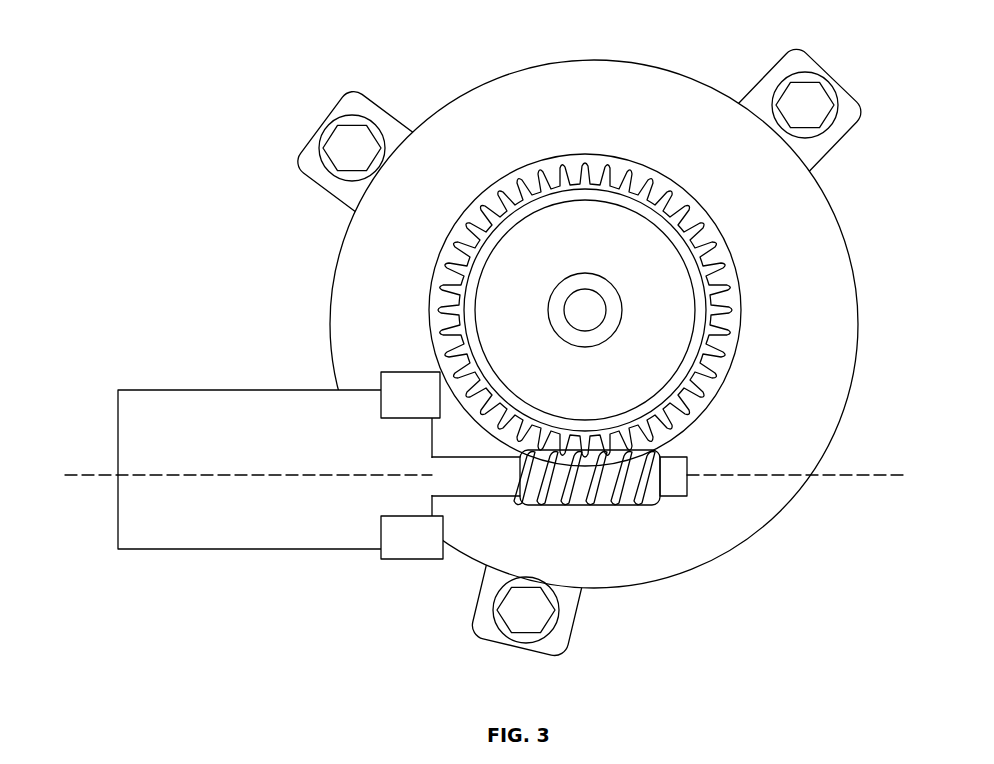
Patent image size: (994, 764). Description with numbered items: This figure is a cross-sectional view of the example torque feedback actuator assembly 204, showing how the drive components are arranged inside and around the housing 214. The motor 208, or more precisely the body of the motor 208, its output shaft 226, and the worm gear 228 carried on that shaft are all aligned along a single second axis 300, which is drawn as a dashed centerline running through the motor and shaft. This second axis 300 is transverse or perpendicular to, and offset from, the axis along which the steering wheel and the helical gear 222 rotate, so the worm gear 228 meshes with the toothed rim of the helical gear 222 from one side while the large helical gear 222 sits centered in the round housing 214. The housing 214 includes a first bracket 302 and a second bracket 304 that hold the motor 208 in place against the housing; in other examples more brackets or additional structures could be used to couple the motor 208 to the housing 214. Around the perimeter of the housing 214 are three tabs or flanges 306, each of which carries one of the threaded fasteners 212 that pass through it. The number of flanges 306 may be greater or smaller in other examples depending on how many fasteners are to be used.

The actuator assembly 204 is at (491, 355).
The housing 214 is at (473, 120).
The threaded fasteners 212 is at (338, 143).
The flanges 306 is at (312, 168).
The helical gear 222 is at (567, 197).
The motor 208 is at (237, 407).
The first bracket 302 is at (381, 377).
The second bracket 304 is at (381, 558).
The second axis 300 is at (100, 472).
The output shaft 226 is at (472, 498).
The worm gear 228 is at (637, 500).